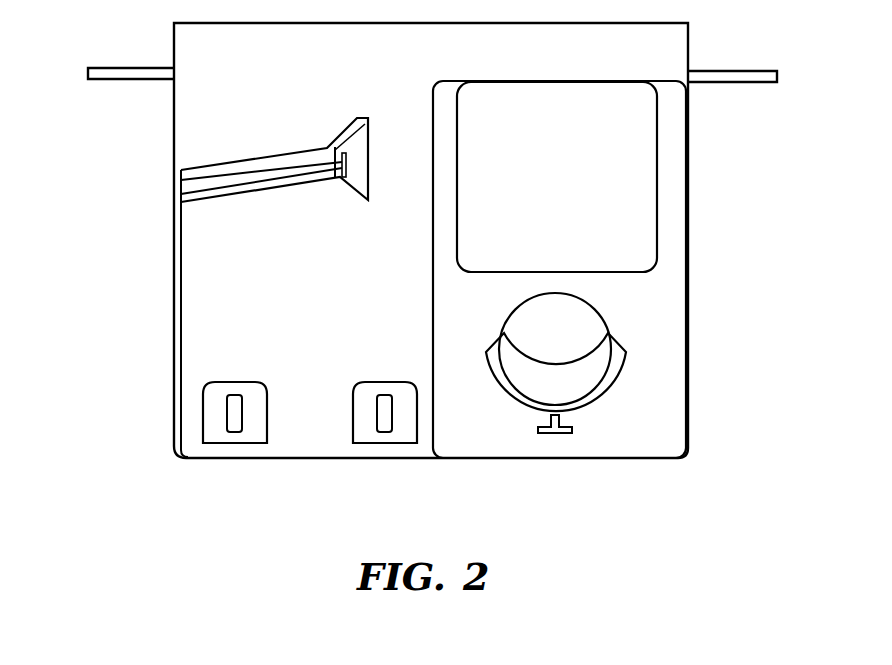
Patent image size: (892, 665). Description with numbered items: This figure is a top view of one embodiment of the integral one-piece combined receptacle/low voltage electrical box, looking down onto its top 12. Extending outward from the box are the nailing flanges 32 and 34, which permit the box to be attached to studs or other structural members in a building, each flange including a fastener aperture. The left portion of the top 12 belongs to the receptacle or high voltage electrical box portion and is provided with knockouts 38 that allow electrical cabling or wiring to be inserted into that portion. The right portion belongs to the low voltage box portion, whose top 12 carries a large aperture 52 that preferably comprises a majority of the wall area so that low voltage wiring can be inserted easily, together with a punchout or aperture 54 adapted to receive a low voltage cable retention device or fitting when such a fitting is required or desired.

The top 12 is at (322, 306).
The nailing flange 32 is at (250, 170).
The nailing flange 34 is at (122, 72).
The knockout 38 is at (240, 410).
The aperture 52 is at (620, 180).
The punchout or aperture 54 is at (587, 352).